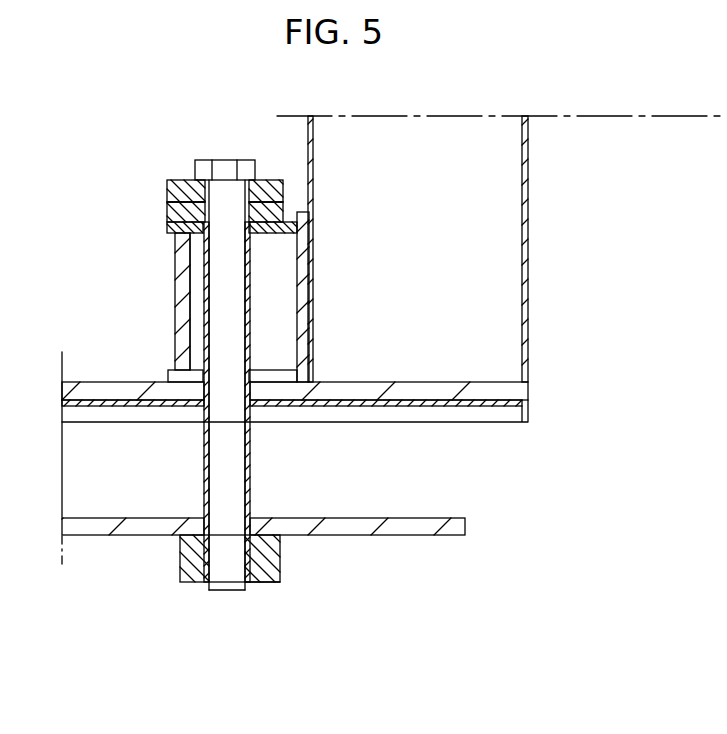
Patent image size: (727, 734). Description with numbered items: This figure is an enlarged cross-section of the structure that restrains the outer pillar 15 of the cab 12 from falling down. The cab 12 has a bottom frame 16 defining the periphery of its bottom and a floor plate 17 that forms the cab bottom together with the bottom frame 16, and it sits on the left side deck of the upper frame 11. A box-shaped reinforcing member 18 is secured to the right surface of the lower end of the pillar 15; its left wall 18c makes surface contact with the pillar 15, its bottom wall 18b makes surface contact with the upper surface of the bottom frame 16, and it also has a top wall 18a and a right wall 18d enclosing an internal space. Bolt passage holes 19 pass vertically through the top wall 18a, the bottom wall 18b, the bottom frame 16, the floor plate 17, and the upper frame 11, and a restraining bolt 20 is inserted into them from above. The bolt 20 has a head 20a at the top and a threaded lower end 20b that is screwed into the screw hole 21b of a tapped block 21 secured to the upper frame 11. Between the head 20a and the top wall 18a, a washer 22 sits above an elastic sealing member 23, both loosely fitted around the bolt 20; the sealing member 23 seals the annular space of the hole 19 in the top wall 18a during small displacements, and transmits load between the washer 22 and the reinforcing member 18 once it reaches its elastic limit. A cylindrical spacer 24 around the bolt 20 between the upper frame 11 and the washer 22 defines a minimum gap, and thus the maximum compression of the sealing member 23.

The upper frame 11 is at (92, 536).
The cab 12 is at (498, 256).
The pillar 15 is at (530, 212).
The bottom frame 16 is at (108, 382).
The floor plate 17 is at (128, 406).
The reinforcing member 18 is at (233, 331).
The top wall 18a is at (284, 200).
The bottom wall 18b is at (283, 382).
The left wall 18c is at (310, 272).
The right wall 18d is at (186, 335).
The bolt passage holes 19 is at (254, 234).
The restraining bolt 20 is at (242, 359).
The head 20a is at (219, 160).
The lower end 20b is at (227, 591).
The tapped block 21 is at (281, 565).
The screw hole 21b is at (246, 580).
The washer 22 is at (186, 180).
The sealing member 23 is at (168, 204).
The cylindrical spacer 24 is at (200, 290).